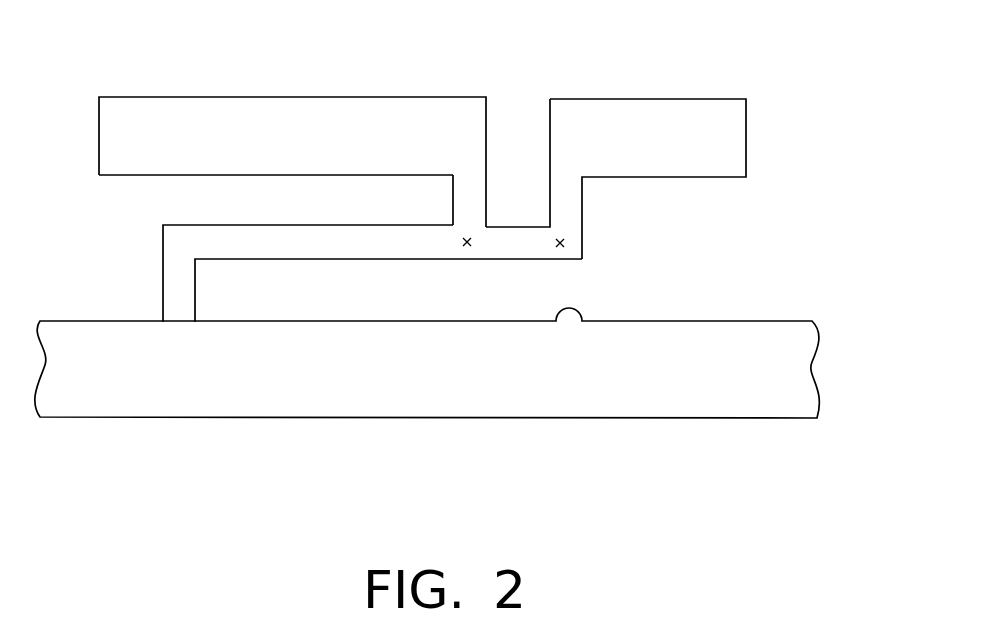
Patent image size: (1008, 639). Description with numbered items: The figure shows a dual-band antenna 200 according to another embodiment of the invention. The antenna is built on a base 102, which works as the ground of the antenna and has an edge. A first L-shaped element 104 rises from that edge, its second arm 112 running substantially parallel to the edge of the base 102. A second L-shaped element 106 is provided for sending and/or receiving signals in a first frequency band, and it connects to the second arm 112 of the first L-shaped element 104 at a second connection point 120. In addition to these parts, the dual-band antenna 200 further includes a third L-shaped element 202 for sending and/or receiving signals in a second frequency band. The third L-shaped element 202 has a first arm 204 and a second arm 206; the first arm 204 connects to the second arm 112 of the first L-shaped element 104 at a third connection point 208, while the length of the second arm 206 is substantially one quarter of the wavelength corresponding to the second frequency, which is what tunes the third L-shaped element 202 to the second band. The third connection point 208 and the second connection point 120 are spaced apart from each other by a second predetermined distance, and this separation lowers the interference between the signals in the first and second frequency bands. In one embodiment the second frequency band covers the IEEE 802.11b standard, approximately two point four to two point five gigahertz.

The base 102 is at (458, 410).
The first L-shaped element 104 is at (173, 240).
The second L-shaped element 106 is at (562, 110).
The second arm 112 is at (260, 245).
The second connection point 120 is at (567, 245).
The dual-band antenna 200 is at (742, 268).
The third L-shaped element 202 is at (460, 108).
The first arm 204 is at (463, 204).
The second arm 206 is at (212, 117).
The third connection point 208 is at (467, 250).